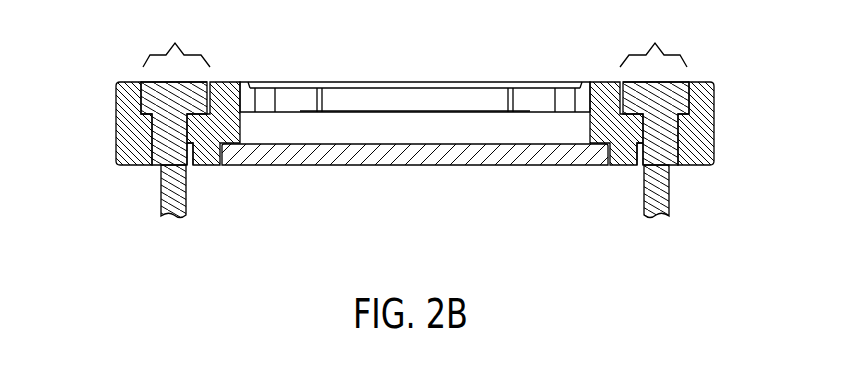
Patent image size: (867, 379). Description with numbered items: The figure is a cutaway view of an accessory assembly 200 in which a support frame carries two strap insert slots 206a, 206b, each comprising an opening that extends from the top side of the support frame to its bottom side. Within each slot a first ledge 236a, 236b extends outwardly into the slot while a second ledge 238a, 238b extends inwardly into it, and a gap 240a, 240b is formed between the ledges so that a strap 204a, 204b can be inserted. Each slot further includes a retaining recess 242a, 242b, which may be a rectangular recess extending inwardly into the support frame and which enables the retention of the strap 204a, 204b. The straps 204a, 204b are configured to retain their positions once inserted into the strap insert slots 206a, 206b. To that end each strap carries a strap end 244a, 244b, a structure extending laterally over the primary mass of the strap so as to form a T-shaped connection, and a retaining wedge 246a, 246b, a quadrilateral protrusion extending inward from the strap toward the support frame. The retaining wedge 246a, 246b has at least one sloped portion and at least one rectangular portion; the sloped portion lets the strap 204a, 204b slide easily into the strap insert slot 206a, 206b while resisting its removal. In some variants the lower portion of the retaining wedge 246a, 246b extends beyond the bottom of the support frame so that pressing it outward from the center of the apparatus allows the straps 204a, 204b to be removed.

The accessory assembly 200 is at (597, 247).
The strap 204a is at (167, 193).
The strap 204b is at (667, 193).
The strap insert slot 206a is at (176, 42).
The strap insert slot 206b is at (653, 42).
The first ledge 236a is at (192, 128).
The first ledge 236b is at (640, 128).
The second ledge 238a is at (143, 117).
The second ledge 238b is at (688, 117).
The gap 240a is at (165, 133).
The gap 240b is at (668, 133).
The retaining recess 242a is at (195, 160).
The retaining recess 242b is at (633, 160).
The strap end 244a is at (158, 82).
The strap end 244b is at (675, 82).
The retaining wedge 246a is at (188, 152).
The retaining wedge 246b is at (642, 147).